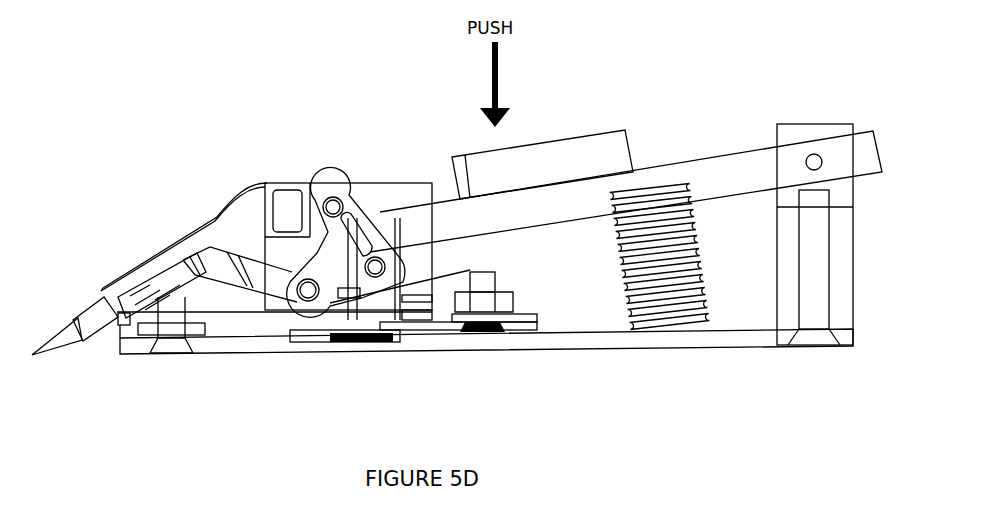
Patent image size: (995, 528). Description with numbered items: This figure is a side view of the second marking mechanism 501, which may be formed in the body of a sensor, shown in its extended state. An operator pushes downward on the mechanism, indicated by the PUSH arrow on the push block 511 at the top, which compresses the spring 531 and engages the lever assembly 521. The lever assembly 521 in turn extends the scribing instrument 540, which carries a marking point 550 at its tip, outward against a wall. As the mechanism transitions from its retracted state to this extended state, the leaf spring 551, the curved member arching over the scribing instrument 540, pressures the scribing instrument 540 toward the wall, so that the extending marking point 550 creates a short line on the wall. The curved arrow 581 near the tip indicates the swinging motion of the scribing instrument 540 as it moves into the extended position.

The marking mechanism 501 is at (95, 125).
The push block 511 is at (468, 155).
The lever assembly 521 is at (558, 272).
The spring 531 is at (700, 250).
The scribing instrument 540 is at (100, 320).
The marking point 550 is at (48, 345).
The leaf spring 551 is at (218, 217).
The rotation direction of probe 581 is at (60, 290).